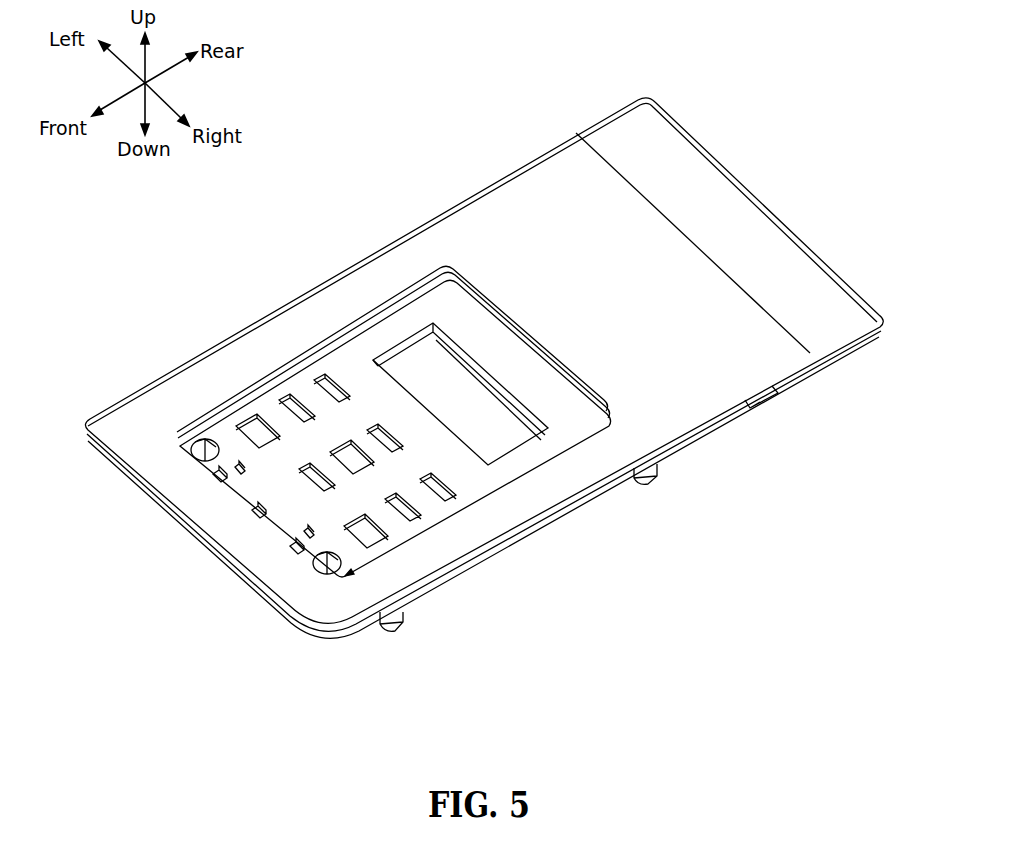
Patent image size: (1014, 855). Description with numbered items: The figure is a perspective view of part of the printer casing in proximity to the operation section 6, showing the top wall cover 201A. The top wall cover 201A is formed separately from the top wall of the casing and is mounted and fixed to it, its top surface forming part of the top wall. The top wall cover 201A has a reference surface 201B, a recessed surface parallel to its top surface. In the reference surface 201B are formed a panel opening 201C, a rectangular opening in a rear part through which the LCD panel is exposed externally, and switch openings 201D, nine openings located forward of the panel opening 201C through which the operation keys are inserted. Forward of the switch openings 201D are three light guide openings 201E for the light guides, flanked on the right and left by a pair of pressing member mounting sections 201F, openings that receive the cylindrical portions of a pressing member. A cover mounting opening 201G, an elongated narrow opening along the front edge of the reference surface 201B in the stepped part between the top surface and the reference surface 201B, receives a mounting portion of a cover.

The operation section 6 is at (352, 192).
The top wall cover 201A is at (640, 248).
The reference surface 201B is at (450, 303).
The panel opening 201C is at (500, 432).
The switch openings 201D is at (376, 540).
The light guide openings 201E is at (300, 550).
The pressing member mounting sections 201F is at (195, 452).
The cover mounting opening 201G is at (520, 350).